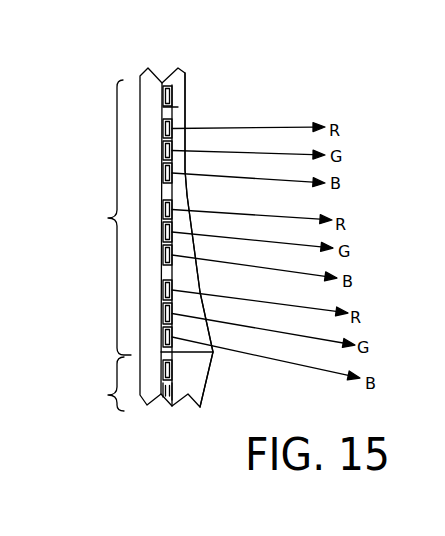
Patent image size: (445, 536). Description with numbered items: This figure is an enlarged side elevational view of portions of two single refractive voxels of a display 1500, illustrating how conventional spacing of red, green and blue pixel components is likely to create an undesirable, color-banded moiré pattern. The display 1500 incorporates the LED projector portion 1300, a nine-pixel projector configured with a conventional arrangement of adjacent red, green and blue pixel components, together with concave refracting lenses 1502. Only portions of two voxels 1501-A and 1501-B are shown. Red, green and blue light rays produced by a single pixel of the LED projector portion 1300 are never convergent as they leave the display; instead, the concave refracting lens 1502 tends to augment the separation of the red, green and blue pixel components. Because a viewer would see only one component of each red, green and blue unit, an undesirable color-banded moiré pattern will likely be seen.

The display 1500 is at (123, 72).
The LED projector portion 1300 is at (152, 79).
The concave refracting lens 1502 is at (178, 105).
The voxel 1501-A is at (108, 218).
The voxel 1501-B is at (108, 395).